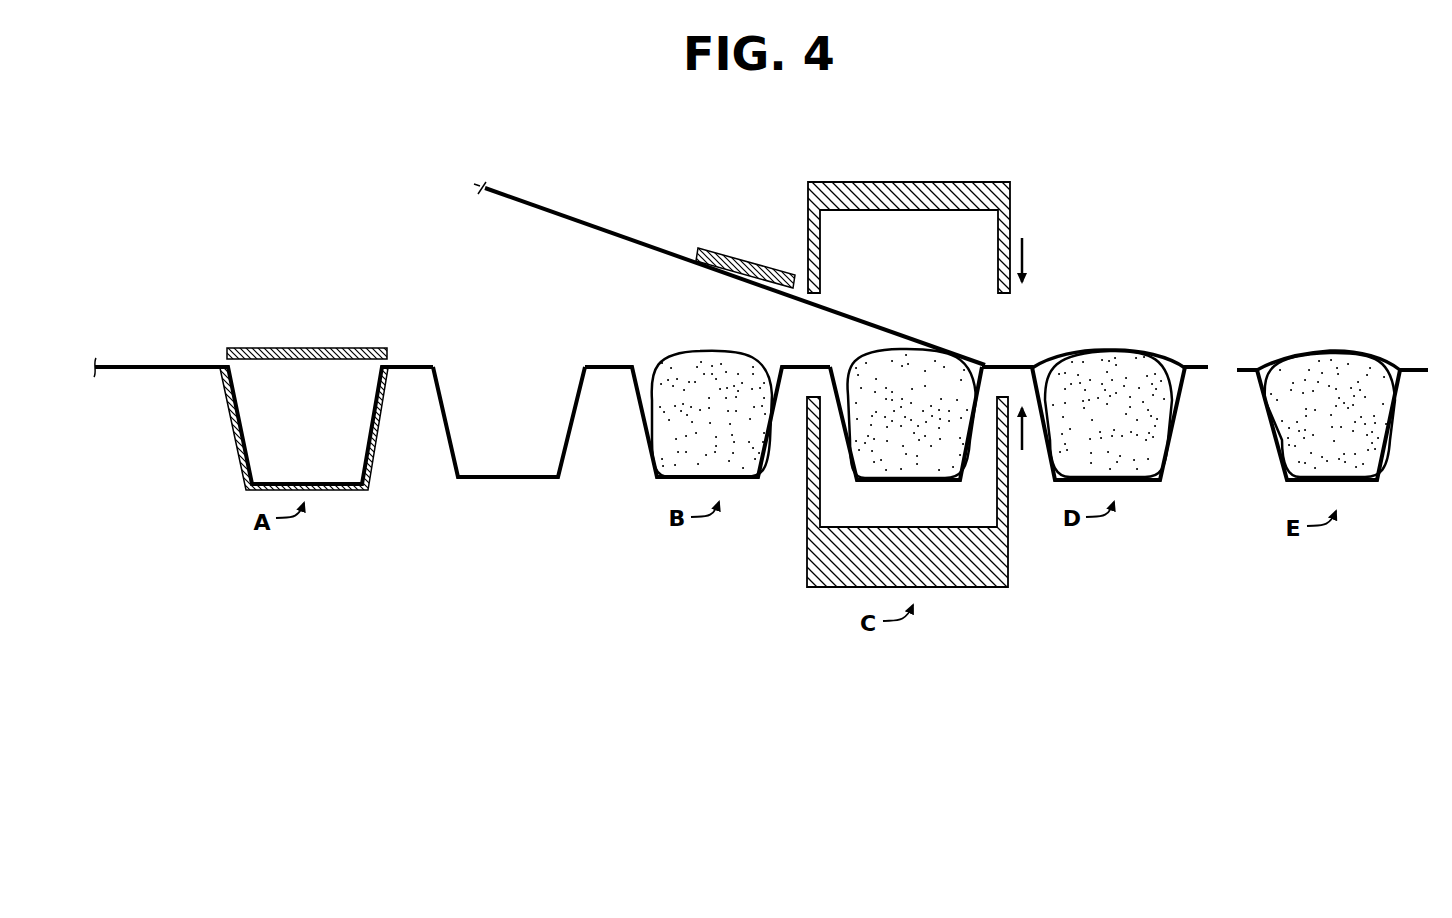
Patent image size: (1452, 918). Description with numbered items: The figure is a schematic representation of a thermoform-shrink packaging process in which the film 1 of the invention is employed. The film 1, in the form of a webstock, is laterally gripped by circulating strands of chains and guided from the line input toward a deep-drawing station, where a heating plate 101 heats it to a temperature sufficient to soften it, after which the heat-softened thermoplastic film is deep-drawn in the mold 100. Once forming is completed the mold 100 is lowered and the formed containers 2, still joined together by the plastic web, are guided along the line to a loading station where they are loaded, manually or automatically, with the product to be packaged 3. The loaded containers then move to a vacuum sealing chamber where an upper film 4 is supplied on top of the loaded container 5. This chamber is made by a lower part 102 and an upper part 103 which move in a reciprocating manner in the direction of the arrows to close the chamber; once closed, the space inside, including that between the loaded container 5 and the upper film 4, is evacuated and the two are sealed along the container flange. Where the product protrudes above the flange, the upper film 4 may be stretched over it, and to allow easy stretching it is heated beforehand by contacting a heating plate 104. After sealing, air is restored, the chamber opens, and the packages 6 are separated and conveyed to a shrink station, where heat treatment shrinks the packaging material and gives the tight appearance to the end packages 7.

The film 1 is at (150, 365).
The formed containers 2 is at (501, 480).
The product to be packaged 3 is at (703, 356).
The upper film 4 is at (649, 246).
The loaded container 5 is at (854, 472).
The packages 6 is at (1125, 360).
The end packages 7 is at (1292, 436).
The mold 100 is at (370, 462).
The heating plate 101 is at (312, 345).
The lower part 102 is at (976, 580).
The upper part 103 is at (915, 181).
The heating plate 104 is at (735, 258).